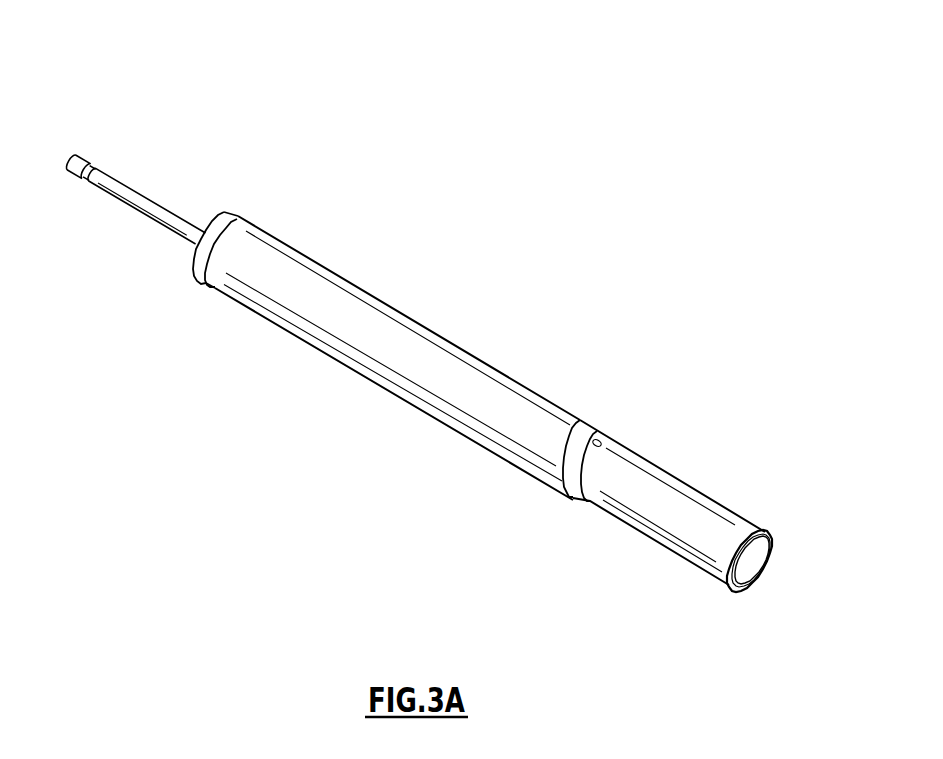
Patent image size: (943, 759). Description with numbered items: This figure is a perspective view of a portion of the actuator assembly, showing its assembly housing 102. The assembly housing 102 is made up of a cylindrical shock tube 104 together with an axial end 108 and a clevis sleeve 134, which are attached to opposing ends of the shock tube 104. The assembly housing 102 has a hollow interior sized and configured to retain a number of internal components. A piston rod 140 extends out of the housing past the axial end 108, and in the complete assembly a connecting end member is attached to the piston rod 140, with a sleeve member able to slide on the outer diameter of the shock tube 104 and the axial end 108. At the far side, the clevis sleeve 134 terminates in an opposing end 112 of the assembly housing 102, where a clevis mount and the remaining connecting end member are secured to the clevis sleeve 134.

The assembly housing 102 is at (428, 48).
The cylindrical shock tube 104 is at (424, 326).
The axial end 108 is at (200, 272).
The opposing end 112 is at (731, 592).
The clevis sleeve 134 is at (685, 482).
The piston rod 140 is at (150, 196).